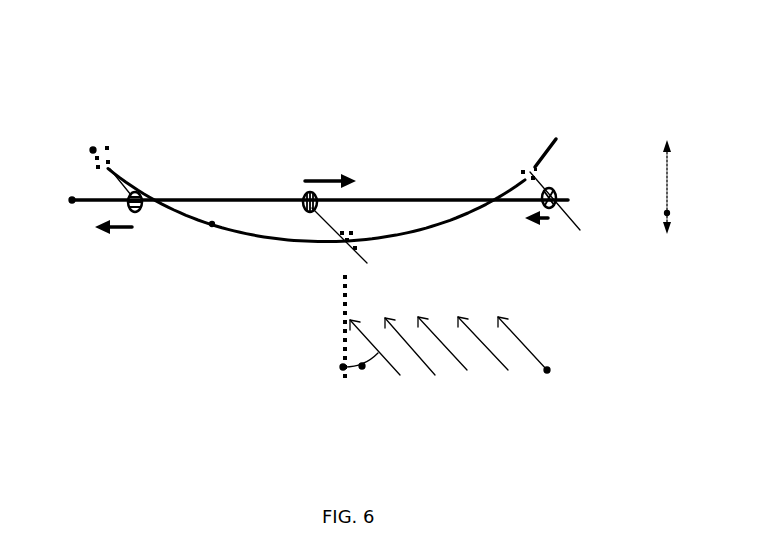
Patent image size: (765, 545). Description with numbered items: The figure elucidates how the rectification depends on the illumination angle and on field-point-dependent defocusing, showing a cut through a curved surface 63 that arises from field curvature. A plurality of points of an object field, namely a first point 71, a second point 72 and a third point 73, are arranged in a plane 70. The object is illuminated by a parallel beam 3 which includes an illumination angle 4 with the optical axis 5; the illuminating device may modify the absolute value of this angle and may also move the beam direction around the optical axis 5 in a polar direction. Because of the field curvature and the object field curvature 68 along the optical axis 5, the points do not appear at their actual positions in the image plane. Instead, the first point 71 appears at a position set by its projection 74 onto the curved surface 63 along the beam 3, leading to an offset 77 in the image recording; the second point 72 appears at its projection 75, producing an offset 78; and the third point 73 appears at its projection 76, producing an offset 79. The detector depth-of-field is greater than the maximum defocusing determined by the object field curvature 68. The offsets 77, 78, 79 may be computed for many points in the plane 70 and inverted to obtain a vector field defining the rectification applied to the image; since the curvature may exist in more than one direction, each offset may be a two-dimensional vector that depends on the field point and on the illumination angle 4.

The beam 3 is at (450, 376).
The illumination angle 4 is at (363, 394).
The optical axis 5 is at (321, 348).
The curved surface 63 is at (316, 228).
The object field curvature 68 is at (654, 187).
The plane 70 is at (298, 229).
The first point 71 is at (560, 188).
The second point 72 is at (319, 208).
The third point 73 is at (136, 214).
The projection 74 is at (534, 146).
The projection 75 is at (336, 259).
The projection 76 is at (85, 139).
The offset 77 is at (537, 240).
The offset 78 is at (330, 160).
The offset 79 is at (113, 247).